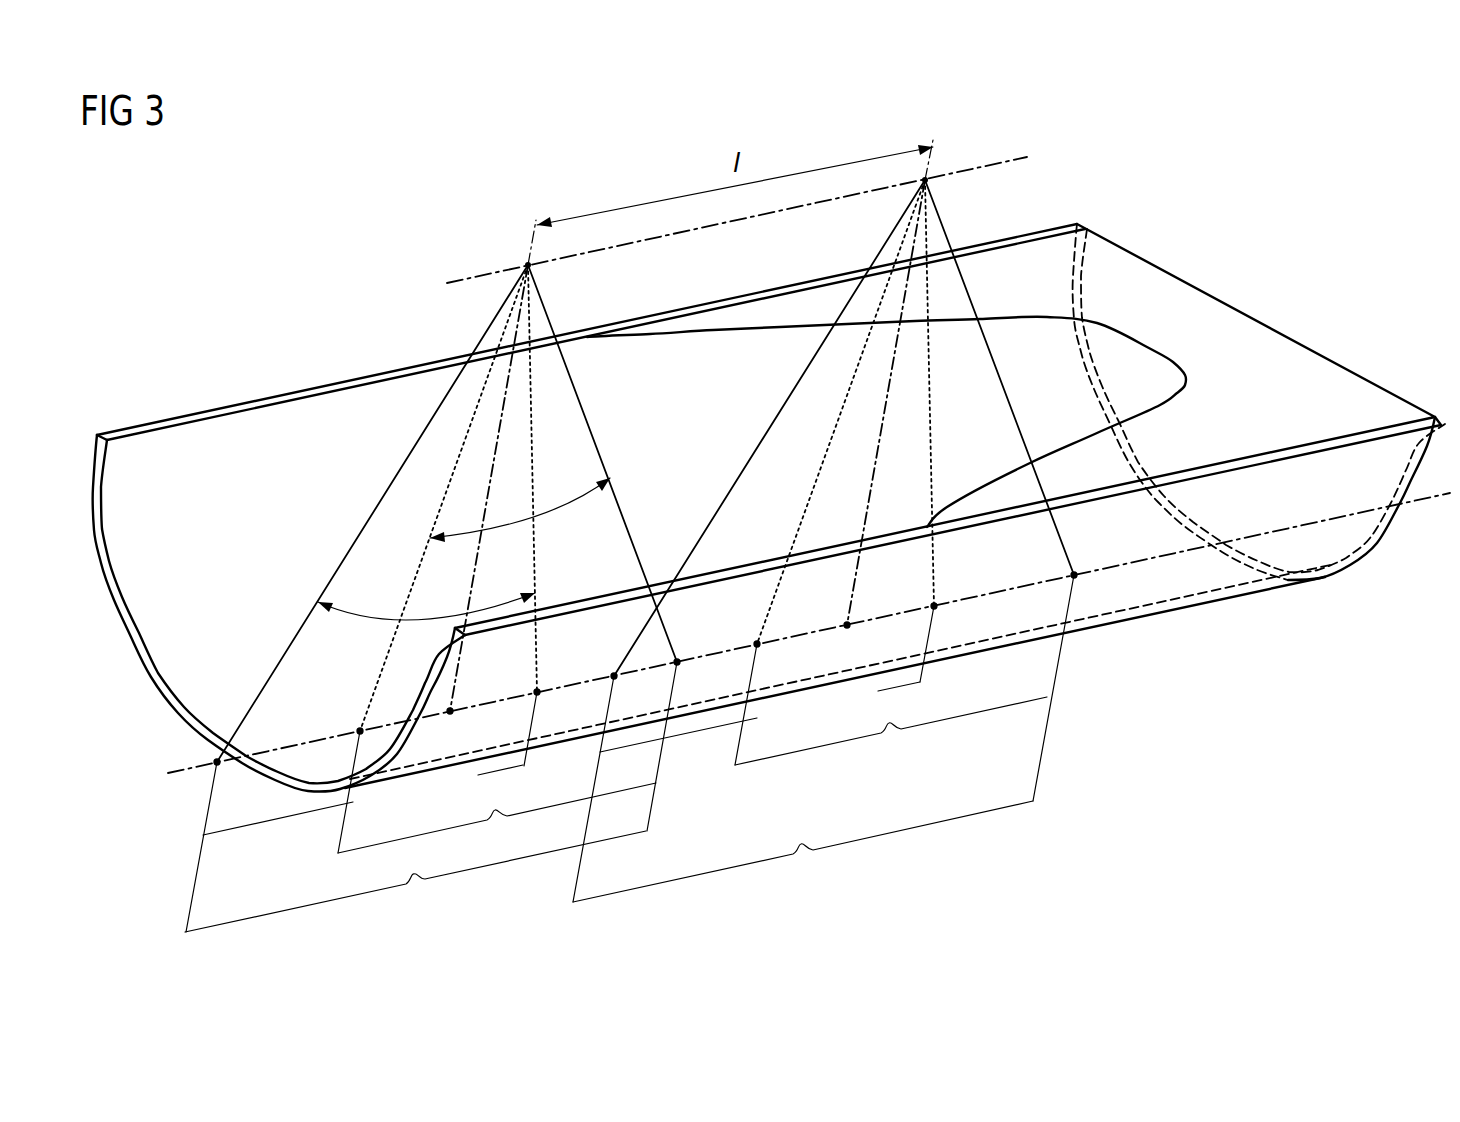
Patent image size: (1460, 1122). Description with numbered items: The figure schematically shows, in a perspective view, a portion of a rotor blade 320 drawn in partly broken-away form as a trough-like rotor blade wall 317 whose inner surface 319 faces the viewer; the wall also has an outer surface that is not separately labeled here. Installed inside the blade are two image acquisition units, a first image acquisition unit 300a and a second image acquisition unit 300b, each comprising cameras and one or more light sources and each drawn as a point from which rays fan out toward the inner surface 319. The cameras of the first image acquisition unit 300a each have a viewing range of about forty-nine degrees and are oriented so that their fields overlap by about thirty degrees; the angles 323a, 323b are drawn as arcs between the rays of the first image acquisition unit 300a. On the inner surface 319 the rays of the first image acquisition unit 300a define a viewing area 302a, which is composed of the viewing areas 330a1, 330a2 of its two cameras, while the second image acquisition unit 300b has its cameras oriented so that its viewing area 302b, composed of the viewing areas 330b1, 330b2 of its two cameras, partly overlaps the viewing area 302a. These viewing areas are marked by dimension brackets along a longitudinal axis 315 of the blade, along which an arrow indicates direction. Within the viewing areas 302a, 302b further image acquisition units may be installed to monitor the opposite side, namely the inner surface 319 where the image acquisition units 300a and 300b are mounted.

The first image acquisition unit 300a is at (540, 276).
The second image acquisition unit 300b is at (940, 190).
The viewing area of first image acquisition unit 302a is at (415, 883).
The viewing area of second image acquisition unit 302b is at (803, 851).
The longitudinal axis 315 is at (1012, 157).
The rotor blade wall 317 is at (152, 688).
The inner surface 319 is at (182, 448).
The rotor blade 320 is at (284, 289).
The first emission angle 323a is at (410, 615).
The second emission angle 323b is at (550, 503).
The viewing area of first camera of first image acquisition unit 330a1 is at (353, 802).
The viewing area of second camera of first image acquisition unit 330a2 is at (507, 764).
The viewing area of first camera of second image acquisition unit 330b1 is at (757, 718).
The viewing area of second camera of second image acquisition unit 330b2 is at (904, 688).